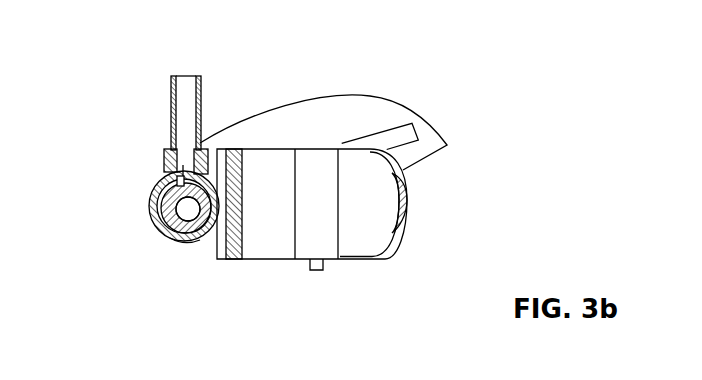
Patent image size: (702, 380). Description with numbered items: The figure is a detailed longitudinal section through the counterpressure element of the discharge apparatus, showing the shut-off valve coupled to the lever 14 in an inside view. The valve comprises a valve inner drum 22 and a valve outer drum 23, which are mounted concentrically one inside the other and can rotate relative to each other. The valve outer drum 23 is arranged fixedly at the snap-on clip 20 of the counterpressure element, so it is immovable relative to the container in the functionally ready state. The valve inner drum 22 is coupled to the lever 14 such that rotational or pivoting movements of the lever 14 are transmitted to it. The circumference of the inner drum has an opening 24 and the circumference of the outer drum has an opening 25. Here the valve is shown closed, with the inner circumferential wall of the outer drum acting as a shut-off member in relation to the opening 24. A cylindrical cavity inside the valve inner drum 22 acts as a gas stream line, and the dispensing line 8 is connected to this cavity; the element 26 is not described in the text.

The dispensing line 8 is at (176, 103).
The lever 14 is at (312, 117).
The snap-on clip 20 is at (367, 227).
The valve inner drum 22 is at (170, 241).
The valve outer drum 23 is at (157, 226).
The opening 24 is at (190, 208).
The opening 25 is at (170, 171).
The ring element 26 is at (198, 240).